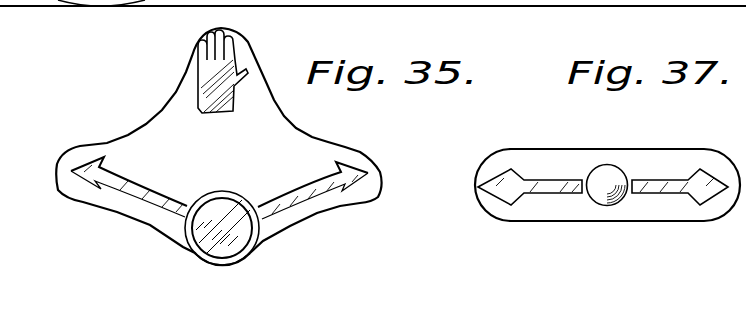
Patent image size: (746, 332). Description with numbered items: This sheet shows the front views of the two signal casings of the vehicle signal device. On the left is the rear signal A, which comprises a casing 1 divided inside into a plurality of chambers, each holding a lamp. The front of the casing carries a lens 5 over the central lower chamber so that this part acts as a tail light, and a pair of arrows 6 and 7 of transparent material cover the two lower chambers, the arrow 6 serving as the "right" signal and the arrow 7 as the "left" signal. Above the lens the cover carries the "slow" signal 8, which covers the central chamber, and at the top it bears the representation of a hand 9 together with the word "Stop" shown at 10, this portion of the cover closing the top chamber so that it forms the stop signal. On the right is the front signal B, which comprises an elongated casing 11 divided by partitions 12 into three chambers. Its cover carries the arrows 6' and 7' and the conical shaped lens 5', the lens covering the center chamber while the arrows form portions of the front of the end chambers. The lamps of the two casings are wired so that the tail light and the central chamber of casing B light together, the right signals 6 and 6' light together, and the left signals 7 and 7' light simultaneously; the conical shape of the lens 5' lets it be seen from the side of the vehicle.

In FIG. 35, the casing 1 is at (328, 145).
In FIG. 35, the lens 5 is at (241, 228).
In FIG. 35, the arrow 6 is at (129, 201).
In FIG. 35, the arrow 7 is at (314, 197).
In FIG. 35, the "slow" signal 8 is at (266, 166).
In FIG. 35, the representation of a hand 9 is at (205, 80).
In FIG. 35, the word "Stop" 10 is at (172, 131).
In FIG. 37, the elongated casing 11 is at (604, 138).
In FIG. 37, the partitions 12 is at (745, 148).
In FIG. 37, the conical shaped lens 5' is at (635, 165).
In FIG. 37, the arrow 6' is at (680, 191).
In FIG. 37, the arrow 7' is at (530, 192).
In FIG. 35, the signal A is at (218, 146).
In FIG. 37, the signal B is at (607, 169).